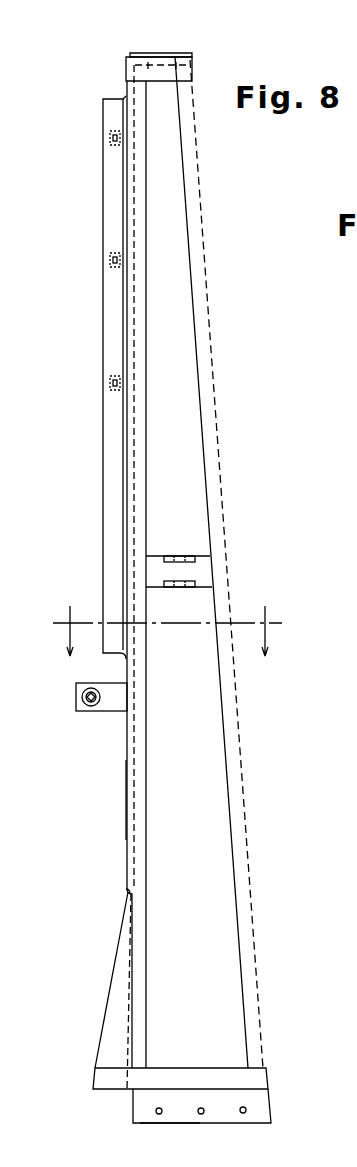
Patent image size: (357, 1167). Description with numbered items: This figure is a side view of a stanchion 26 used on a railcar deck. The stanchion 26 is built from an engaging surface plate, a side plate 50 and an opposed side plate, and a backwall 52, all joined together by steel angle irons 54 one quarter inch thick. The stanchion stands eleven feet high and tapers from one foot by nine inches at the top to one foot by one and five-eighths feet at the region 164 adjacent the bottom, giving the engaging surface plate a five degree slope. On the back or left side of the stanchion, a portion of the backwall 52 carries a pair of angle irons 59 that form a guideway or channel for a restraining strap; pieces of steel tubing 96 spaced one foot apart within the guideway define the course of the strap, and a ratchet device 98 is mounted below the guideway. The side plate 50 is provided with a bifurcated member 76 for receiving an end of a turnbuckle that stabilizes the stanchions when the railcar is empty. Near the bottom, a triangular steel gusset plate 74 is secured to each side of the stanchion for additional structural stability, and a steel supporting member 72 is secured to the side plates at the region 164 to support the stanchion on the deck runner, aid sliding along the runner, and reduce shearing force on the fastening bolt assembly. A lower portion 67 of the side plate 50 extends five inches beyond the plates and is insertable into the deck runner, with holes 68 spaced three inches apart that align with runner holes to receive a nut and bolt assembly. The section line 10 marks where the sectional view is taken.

The stanchion 26 is at (217, 53).
The side plate 50 is at (205, 918).
The backwall 52 is at (108, 800).
The angle irons 54 is at (126, 81).
The angle irons 59 is at (103, 500).
The portion of side plate 67 is at (147, 1119).
The holes 68 is at (165, 1114).
The supporting member 72 is at (100, 1083).
The gusset plate 74 is at (112, 957).
The bifurcated member 76 is at (190, 571).
The steel tubing 96 is at (110, 139).
The ratchet device 98 is at (90, 716).
The bottom end region 164 is at (130, 1093).
The section line 10- 10 is at (167, 619).